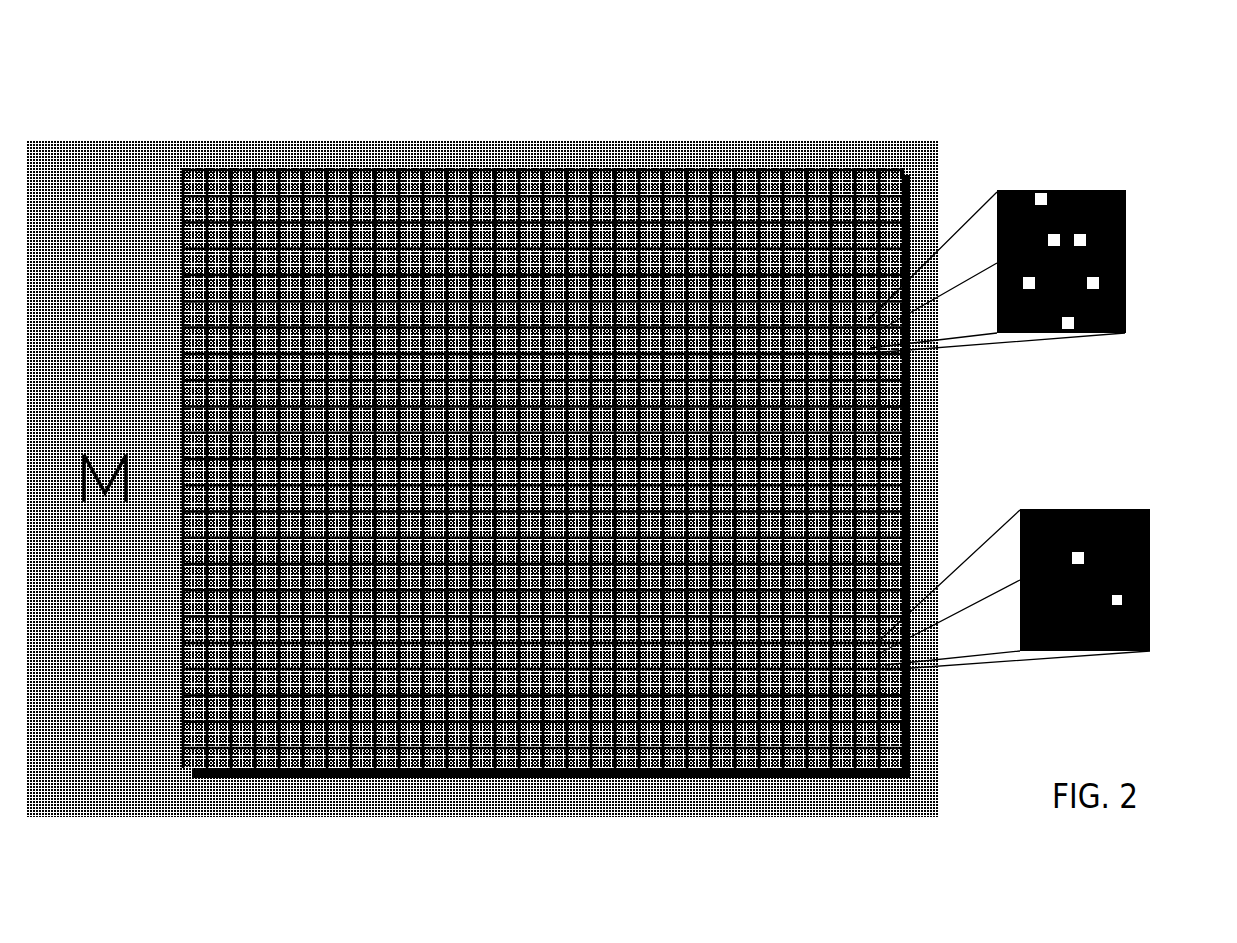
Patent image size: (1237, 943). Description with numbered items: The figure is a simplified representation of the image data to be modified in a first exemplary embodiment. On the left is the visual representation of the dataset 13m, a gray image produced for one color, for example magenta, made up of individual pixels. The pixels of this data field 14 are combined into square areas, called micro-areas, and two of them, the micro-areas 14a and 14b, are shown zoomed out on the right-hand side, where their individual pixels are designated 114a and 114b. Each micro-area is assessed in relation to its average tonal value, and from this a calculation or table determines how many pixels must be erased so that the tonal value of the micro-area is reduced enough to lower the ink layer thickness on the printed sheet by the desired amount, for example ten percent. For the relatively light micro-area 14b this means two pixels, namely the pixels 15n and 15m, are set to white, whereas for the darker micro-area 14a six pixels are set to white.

The visual representation of the dataset 13m is at (83, 173).
The data field 14 is at (599, 417).
The micro-area 14a is at (918, 384).
The micro-area 14b is at (920, 708).
The pixel 114a is at (1023, 190).
The pixel 114b is at (1046, 561).
The pixel 15m is at (1095, 508).
The pixel 15n is at (1150, 580).